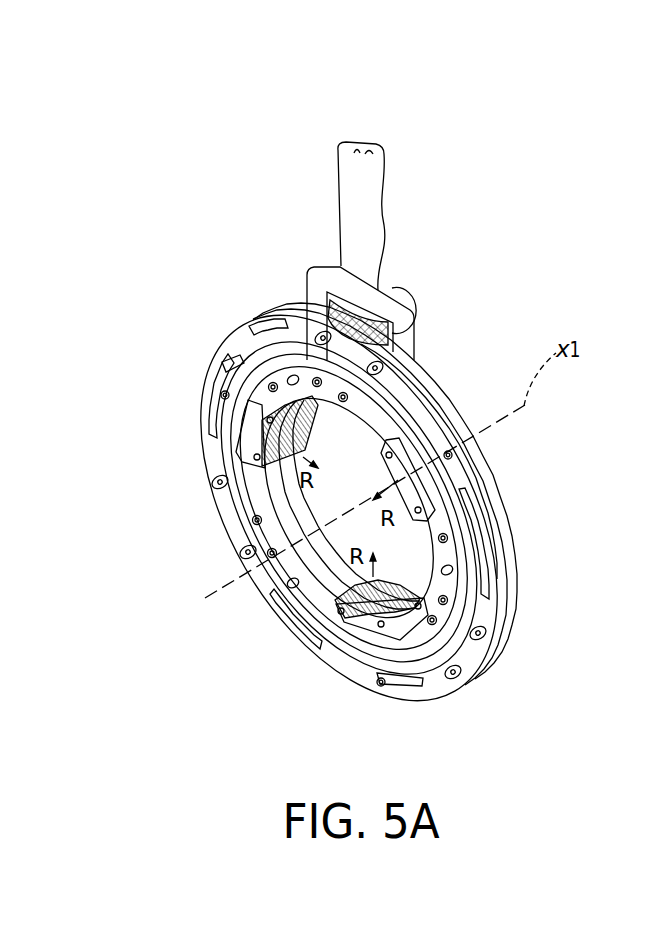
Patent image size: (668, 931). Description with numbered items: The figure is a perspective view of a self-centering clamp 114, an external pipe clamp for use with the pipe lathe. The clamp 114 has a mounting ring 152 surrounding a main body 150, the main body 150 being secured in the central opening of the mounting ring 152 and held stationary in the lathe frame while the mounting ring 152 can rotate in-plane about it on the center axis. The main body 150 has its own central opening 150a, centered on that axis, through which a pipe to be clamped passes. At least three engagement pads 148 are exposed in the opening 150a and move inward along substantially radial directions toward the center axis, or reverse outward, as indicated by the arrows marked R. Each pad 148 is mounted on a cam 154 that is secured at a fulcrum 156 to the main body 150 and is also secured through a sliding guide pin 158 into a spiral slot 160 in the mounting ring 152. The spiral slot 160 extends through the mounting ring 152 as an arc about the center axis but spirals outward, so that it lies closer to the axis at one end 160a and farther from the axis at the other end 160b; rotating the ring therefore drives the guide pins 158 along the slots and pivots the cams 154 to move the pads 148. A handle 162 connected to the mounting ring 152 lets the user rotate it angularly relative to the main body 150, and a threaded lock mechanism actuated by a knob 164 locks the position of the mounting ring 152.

The self-centering clamp 114 is at (236, 220).
The engagement pads 148 is at (425, 450).
The main body 150 is at (418, 648).
The central opening 150a is at (277, 562).
The mounting ring 152 is at (488, 618).
The cams 154 is at (227, 363).
The fulcrum 156 is at (255, 522).
The sliding guide pin 158 is at (221, 394).
The spiral slot 160 is at (261, 338).
The slot end closer to axis 160a is at (409, 482).
The slot end further from axis 160b is at (291, 330).
The handle 162 is at (355, 156).
The knob 164 is at (400, 298).